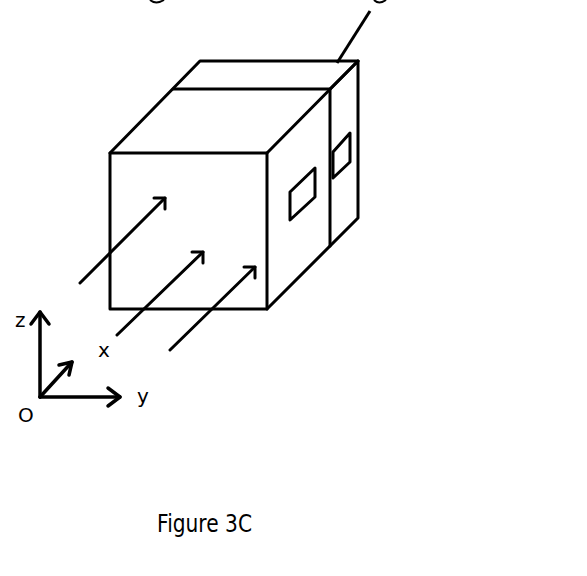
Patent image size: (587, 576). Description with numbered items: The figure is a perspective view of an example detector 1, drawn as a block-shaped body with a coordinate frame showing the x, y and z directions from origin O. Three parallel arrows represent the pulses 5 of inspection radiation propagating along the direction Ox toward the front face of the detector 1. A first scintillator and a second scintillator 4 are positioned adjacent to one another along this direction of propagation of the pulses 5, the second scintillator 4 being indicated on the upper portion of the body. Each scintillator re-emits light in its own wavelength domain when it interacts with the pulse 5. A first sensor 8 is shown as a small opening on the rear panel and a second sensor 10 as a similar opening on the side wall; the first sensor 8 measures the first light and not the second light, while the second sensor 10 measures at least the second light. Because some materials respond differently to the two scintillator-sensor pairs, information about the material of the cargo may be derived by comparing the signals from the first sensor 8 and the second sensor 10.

The detector 1 is at (303, 298).
The second scintillator 4 is at (180, 131).
The pulse of inspection radiation 5 is at (210, 338).
The first sensor 8 is at (338, 153).
The second sensor 10 is at (305, 195).